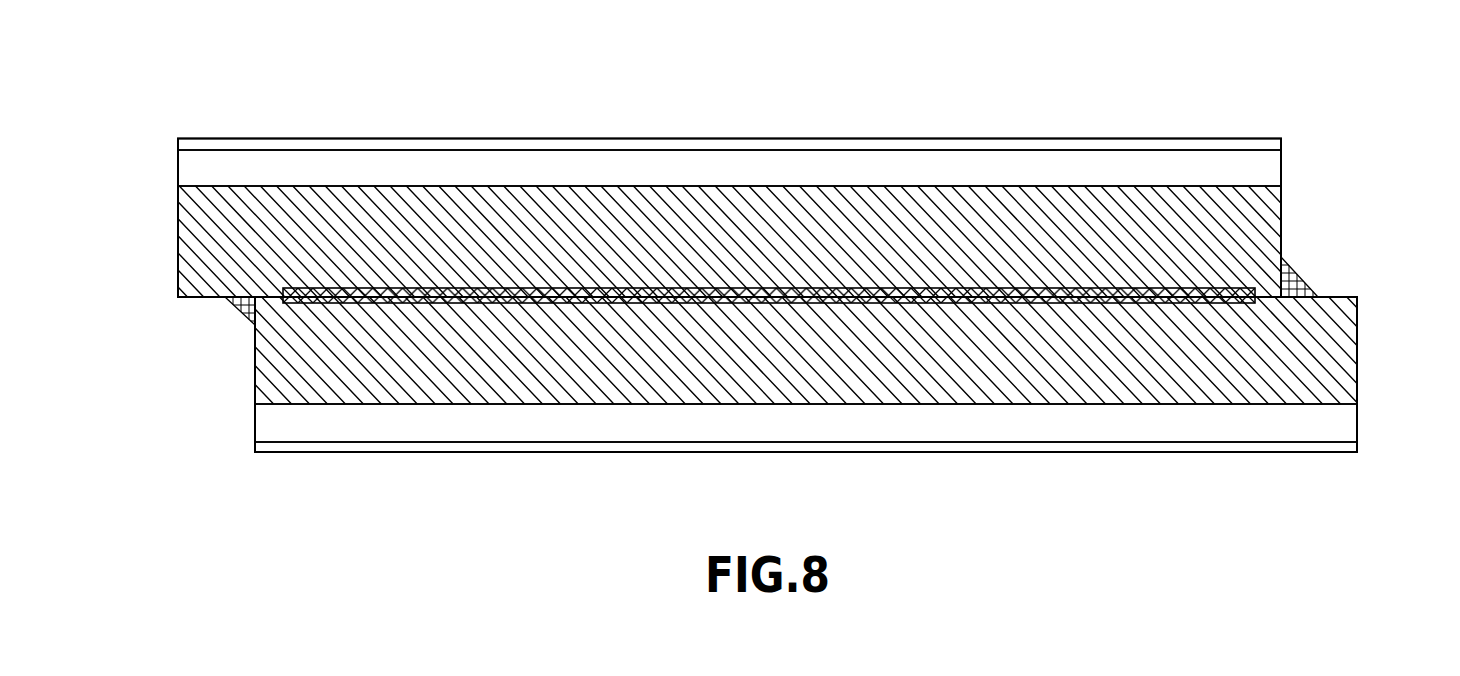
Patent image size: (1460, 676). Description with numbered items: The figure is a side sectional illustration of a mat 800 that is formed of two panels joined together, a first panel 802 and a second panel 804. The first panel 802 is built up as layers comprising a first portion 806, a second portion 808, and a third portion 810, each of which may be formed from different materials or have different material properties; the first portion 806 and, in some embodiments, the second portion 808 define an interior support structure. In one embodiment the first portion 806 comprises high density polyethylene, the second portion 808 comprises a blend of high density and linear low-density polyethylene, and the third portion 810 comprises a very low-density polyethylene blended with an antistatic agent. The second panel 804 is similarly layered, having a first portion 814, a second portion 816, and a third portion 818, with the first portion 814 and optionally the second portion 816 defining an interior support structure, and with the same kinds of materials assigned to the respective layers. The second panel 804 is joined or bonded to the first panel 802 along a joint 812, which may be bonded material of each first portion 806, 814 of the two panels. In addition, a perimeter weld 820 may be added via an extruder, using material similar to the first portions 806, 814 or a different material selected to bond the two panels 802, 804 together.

The mat 800 is at (384, 93).
The first panel 802 is at (165, 138).
The second panel 804 is at (1368, 295).
The first portion of the first panel 806 is at (1257, 227).
The second portion of the first panel 808 is at (1263, 169).
The third portion of the first panel 810 is at (1137, 139).
The joint 812 is at (778, 290).
The first portion of the second panel 814 is at (283, 368).
The second portion of the second panel 816 is at (312, 425).
The third portion of the second panel 818 is at (481, 450).
The perimeter weld 820 is at (238, 310).